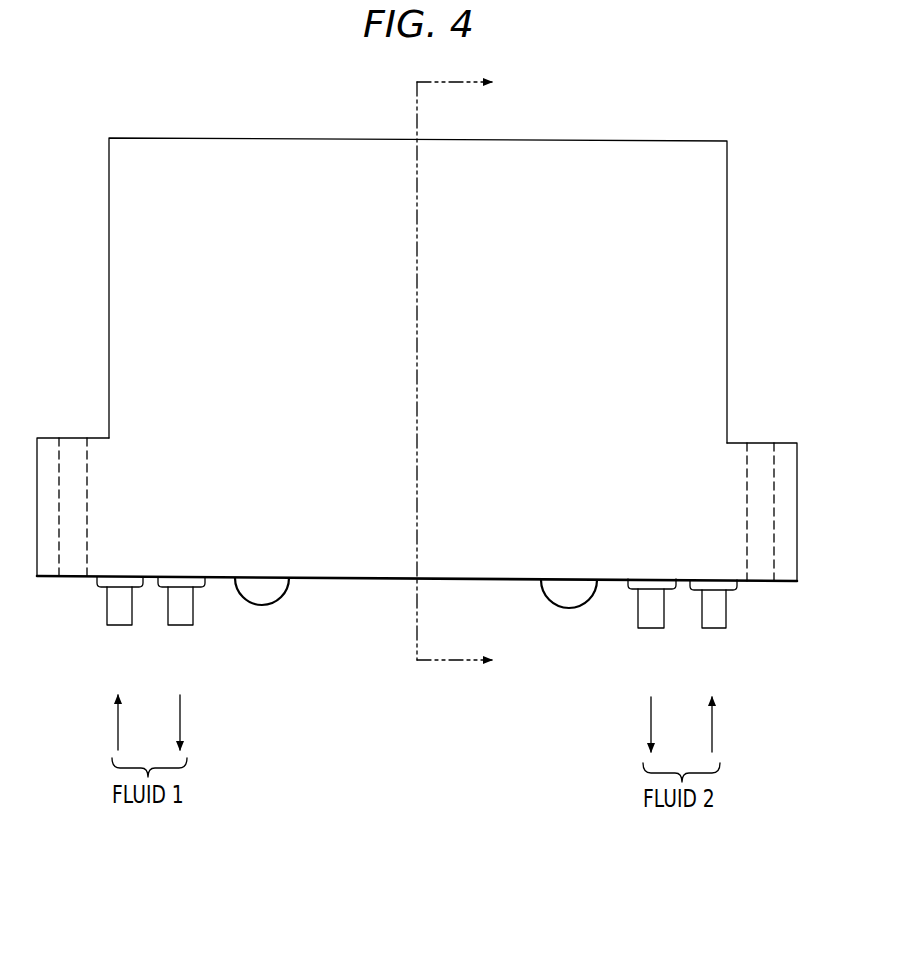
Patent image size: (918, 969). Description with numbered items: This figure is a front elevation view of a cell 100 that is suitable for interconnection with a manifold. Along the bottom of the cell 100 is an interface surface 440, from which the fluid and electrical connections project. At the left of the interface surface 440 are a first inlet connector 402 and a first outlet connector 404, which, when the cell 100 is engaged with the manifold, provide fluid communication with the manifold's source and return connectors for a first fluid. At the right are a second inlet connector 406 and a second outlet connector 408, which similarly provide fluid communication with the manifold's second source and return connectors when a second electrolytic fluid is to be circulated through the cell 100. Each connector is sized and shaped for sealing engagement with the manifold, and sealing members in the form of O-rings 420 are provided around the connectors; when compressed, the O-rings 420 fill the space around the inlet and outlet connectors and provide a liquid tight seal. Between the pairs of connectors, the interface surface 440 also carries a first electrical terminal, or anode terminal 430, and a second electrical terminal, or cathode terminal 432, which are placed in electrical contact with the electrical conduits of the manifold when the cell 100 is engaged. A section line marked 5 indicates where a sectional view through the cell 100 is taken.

The cell 100 is at (80, 192).
The interface surface 440 is at (797, 583).
The section line 5- 5 is at (463, 374).
The O-rings 420 is at (97, 584).
The first inlet connector 402 is at (117, 626).
The first outlet connector 404 is at (178, 626).
The second inlet connector 406 is at (651, 629).
The second outlet connector 408 is at (713, 629).
The first electrical terminal (anode terminal) 430 is at (282, 596).
The second electrical terminal (cathode terminal) 432 is at (544, 590).